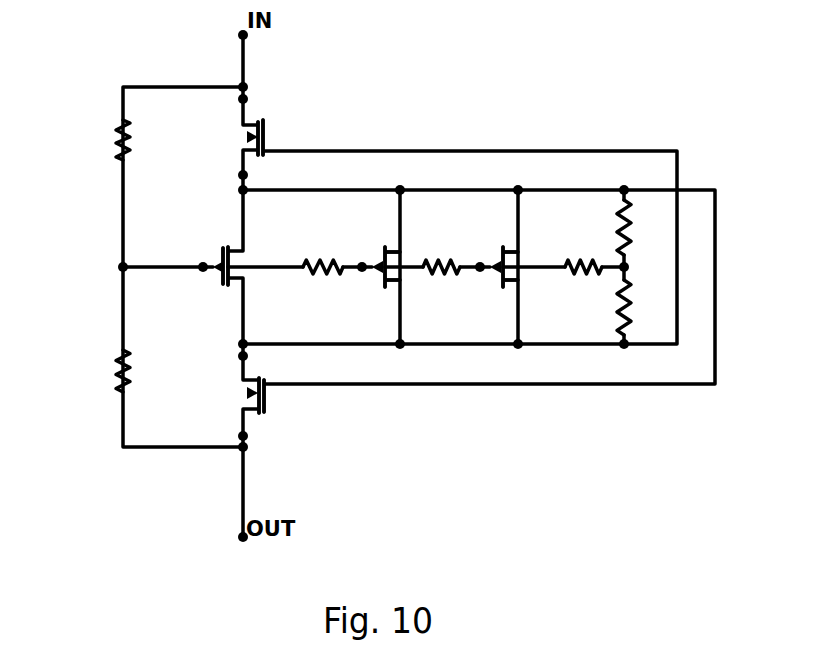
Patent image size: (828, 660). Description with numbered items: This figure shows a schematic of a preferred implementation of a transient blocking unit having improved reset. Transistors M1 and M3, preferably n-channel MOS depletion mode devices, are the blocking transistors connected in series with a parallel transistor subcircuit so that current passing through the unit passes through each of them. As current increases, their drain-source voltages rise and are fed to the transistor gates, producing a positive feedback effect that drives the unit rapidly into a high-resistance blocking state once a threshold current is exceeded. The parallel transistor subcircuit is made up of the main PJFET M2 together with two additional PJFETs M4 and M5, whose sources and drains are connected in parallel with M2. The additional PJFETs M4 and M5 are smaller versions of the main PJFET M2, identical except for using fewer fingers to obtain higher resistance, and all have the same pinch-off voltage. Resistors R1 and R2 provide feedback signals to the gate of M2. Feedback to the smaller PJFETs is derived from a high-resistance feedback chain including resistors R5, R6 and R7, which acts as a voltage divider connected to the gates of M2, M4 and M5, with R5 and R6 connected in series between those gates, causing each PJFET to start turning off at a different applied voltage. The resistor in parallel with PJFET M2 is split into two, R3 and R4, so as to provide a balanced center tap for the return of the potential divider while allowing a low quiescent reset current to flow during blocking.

The resistor R1 is at (116, 137).
The resistor R2 is at (116, 372).
The resistor R3 is at (638, 218).
The resistor R4 is at (618, 318).
The resistor R5 is at (322, 258).
The resistor R6 is at (447, 258).
The resistor R7 is at (571, 258).
The transistor M1 is at (266, 141).
The main PJFET M2 is at (225, 257).
The transistor M3 is at (266, 398).
The additional PJFET M4 is at (382, 278).
The additional PJFET M5 is at (502, 278).